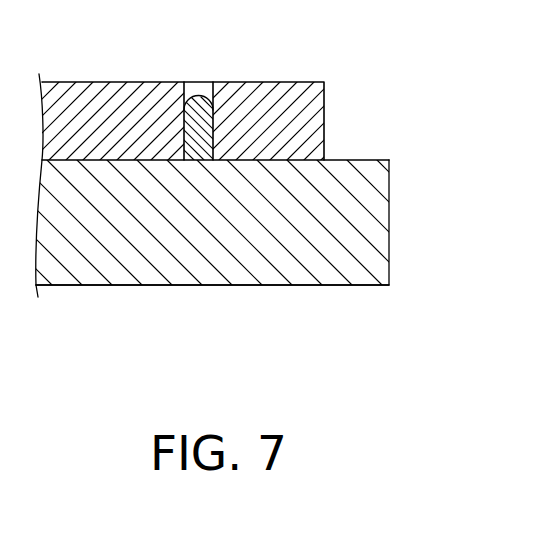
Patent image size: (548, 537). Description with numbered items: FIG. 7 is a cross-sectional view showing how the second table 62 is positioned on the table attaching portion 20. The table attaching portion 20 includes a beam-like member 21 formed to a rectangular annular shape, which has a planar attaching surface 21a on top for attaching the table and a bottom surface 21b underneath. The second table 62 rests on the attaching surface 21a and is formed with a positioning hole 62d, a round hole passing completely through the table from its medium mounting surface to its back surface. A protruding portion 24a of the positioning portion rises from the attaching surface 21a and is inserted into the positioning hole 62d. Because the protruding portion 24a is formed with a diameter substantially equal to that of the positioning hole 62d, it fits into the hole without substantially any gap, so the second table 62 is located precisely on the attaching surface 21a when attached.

The table attaching portion 20 is at (251, 185).
The beam-like member 21 is at (251, 226).
The attaching surface 21a is at (363, 160).
The bottom surface 21b is at (359, 286).
The second table 62 is at (199, 91).
The positioning hole 62d is at (194, 99).
The protruding portion 24a is at (198, 101).